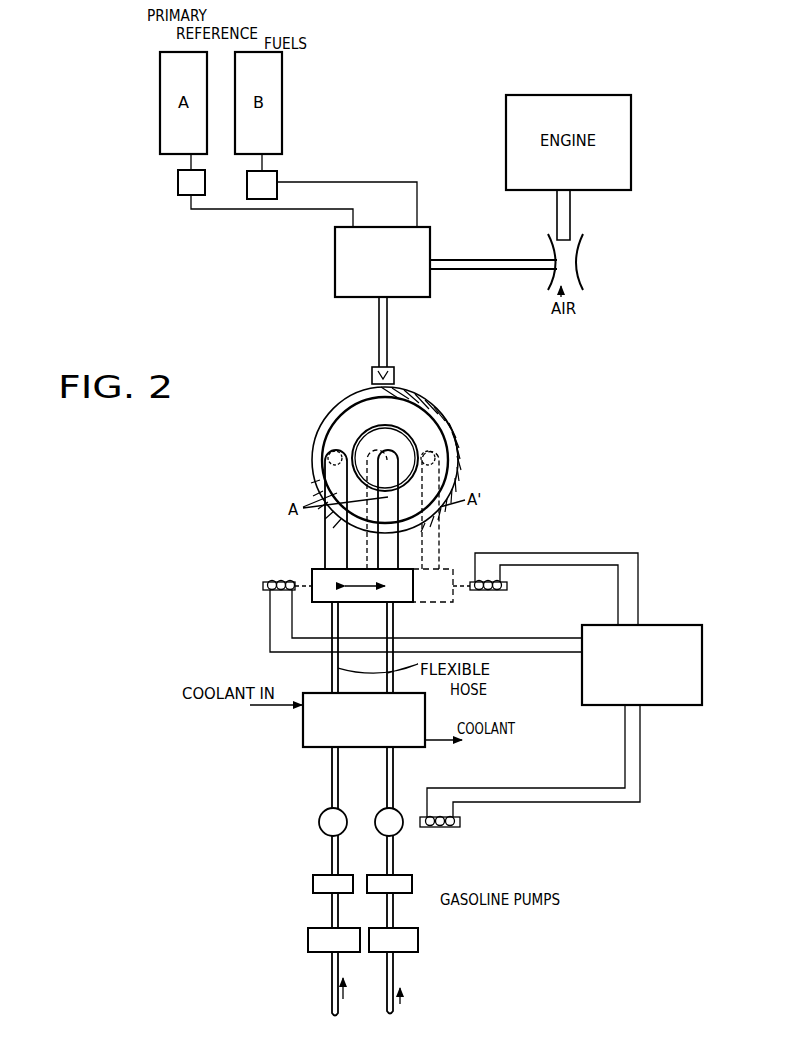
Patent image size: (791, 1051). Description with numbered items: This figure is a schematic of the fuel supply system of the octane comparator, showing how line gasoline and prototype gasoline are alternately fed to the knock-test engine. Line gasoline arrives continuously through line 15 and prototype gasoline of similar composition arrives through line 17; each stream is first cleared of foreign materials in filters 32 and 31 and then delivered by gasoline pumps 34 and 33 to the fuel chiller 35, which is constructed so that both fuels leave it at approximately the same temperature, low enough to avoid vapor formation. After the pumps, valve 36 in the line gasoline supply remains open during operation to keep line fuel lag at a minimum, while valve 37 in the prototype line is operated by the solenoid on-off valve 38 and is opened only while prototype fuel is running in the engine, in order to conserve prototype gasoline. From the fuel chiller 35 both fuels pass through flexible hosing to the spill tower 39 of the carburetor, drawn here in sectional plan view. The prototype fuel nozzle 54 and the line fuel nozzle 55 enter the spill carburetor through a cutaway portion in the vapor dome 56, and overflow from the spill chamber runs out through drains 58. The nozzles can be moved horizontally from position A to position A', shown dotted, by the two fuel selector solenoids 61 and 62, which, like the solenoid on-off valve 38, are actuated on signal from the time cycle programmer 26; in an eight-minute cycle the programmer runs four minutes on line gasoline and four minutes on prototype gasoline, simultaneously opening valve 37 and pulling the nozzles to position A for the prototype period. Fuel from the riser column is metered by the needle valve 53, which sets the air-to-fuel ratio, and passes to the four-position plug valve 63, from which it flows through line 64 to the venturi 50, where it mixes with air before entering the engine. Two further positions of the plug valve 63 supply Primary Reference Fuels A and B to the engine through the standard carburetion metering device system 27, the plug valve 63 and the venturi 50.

The standard carburetion metering device system 27 is at (178, 186).
The 4-position plug valve 63 is at (335, 291).
The line 64 is at (489, 271).
The venturi 50 is at (614, 262).
The needle valve 53 is at (394, 376).
The spill tower 39 is at (310, 461).
The prototype fuel nozzle 54 is at (337, 424).
The line fuel nozzle 55 is at (400, 452).
The vapor dome 56 is at (453, 447).
The drains 58 is at (318, 444).
The fuel selector solenoid 61 is at (284, 580).
The fuel selector solenoid 62 is at (503, 592).
The time cycle programmer 26 is at (648, 700).
The fuel chiller 35 is at (413, 708).
The valve 36 is at (320, 829).
The valve 37 is at (394, 810).
The solenoid on-off valve 38 is at (462, 822).
The gasoline pump 33 is at (412, 885).
The gasoline pump 34 is at (313, 885).
The filter 31 is at (418, 940).
The filter 32 is at (308, 940).
The line 15 is at (330, 970).
The line 17 is at (396, 972).